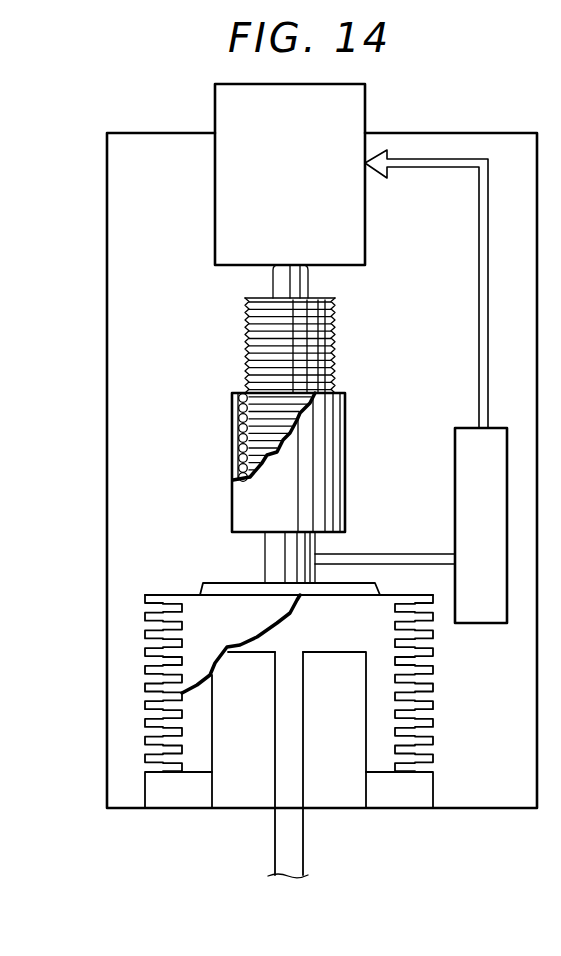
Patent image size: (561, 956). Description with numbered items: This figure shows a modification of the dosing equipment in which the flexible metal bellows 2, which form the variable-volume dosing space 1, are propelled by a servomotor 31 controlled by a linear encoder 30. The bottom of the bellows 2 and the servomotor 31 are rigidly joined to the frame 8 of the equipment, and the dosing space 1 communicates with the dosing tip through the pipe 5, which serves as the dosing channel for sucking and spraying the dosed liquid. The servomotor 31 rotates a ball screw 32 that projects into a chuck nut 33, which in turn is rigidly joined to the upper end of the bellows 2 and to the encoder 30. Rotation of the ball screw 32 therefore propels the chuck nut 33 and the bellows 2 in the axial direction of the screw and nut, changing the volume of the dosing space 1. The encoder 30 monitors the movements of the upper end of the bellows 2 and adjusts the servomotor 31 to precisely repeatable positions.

The dosing space 1 is at (433, 683).
The bellows 2 is at (153, 596).
The pipe 5 is at (301, 838).
The support frame 8 is at (165, 140).
The linear encoder 30 is at (462, 473).
The servomotor 31 is at (362, 100).
The ball screw 32 is at (313, 358).
The chuck nut 33 is at (247, 500).